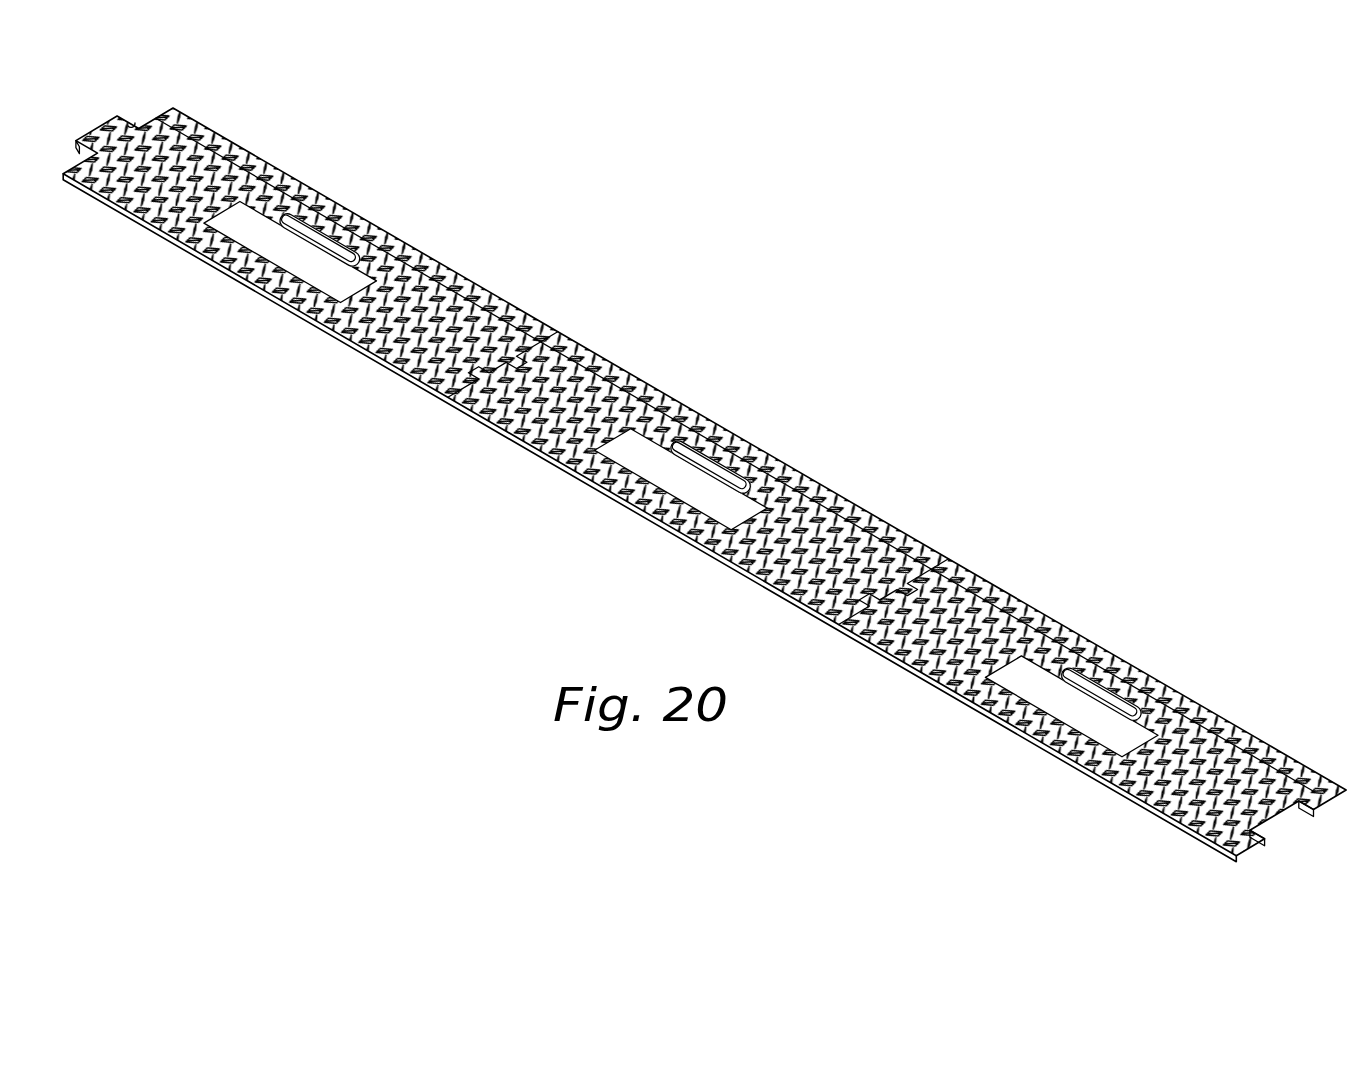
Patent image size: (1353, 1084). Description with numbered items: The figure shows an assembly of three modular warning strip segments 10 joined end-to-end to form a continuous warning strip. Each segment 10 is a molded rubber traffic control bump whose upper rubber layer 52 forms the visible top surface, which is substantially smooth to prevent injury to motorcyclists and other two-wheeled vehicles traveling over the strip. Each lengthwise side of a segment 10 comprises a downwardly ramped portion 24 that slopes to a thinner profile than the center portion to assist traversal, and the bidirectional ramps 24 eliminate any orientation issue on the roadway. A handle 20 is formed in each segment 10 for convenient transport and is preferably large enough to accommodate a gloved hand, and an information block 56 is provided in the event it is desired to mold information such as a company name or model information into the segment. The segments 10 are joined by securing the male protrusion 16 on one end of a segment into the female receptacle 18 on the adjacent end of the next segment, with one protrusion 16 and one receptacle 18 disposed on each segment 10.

The modular warning strip segment 10 is at (358, 206).
The male protrusion 16 is at (118, 112).
The female receptacle 18 is at (1300, 814).
The handle 20 is at (722, 462).
The downwardly ramped portion 24 is at (858, 512).
The upper rubber layer 52 is at (418, 283).
The information block 56 is at (303, 258).